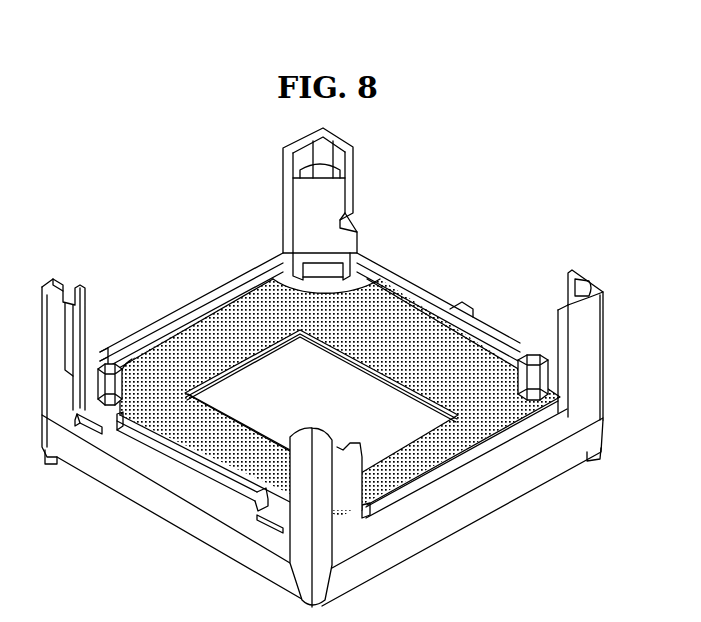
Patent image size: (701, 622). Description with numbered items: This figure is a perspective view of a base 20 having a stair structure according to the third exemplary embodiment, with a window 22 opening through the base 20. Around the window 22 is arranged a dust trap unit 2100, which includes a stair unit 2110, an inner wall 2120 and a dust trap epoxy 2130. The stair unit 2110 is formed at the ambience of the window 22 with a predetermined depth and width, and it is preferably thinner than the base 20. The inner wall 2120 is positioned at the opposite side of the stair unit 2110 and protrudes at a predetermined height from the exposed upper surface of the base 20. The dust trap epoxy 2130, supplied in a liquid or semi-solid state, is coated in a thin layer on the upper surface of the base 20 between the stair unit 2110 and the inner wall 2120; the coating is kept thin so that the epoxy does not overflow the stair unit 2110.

The base 20 is at (533, 160).
The window 22 is at (288, 370).
The dust trap unit 2100 is at (540, 288).
The stair unit 2110 is at (365, 358).
The inner wall 2120 is at (487, 343).
The dust trap epoxy 2130 is at (427, 348).